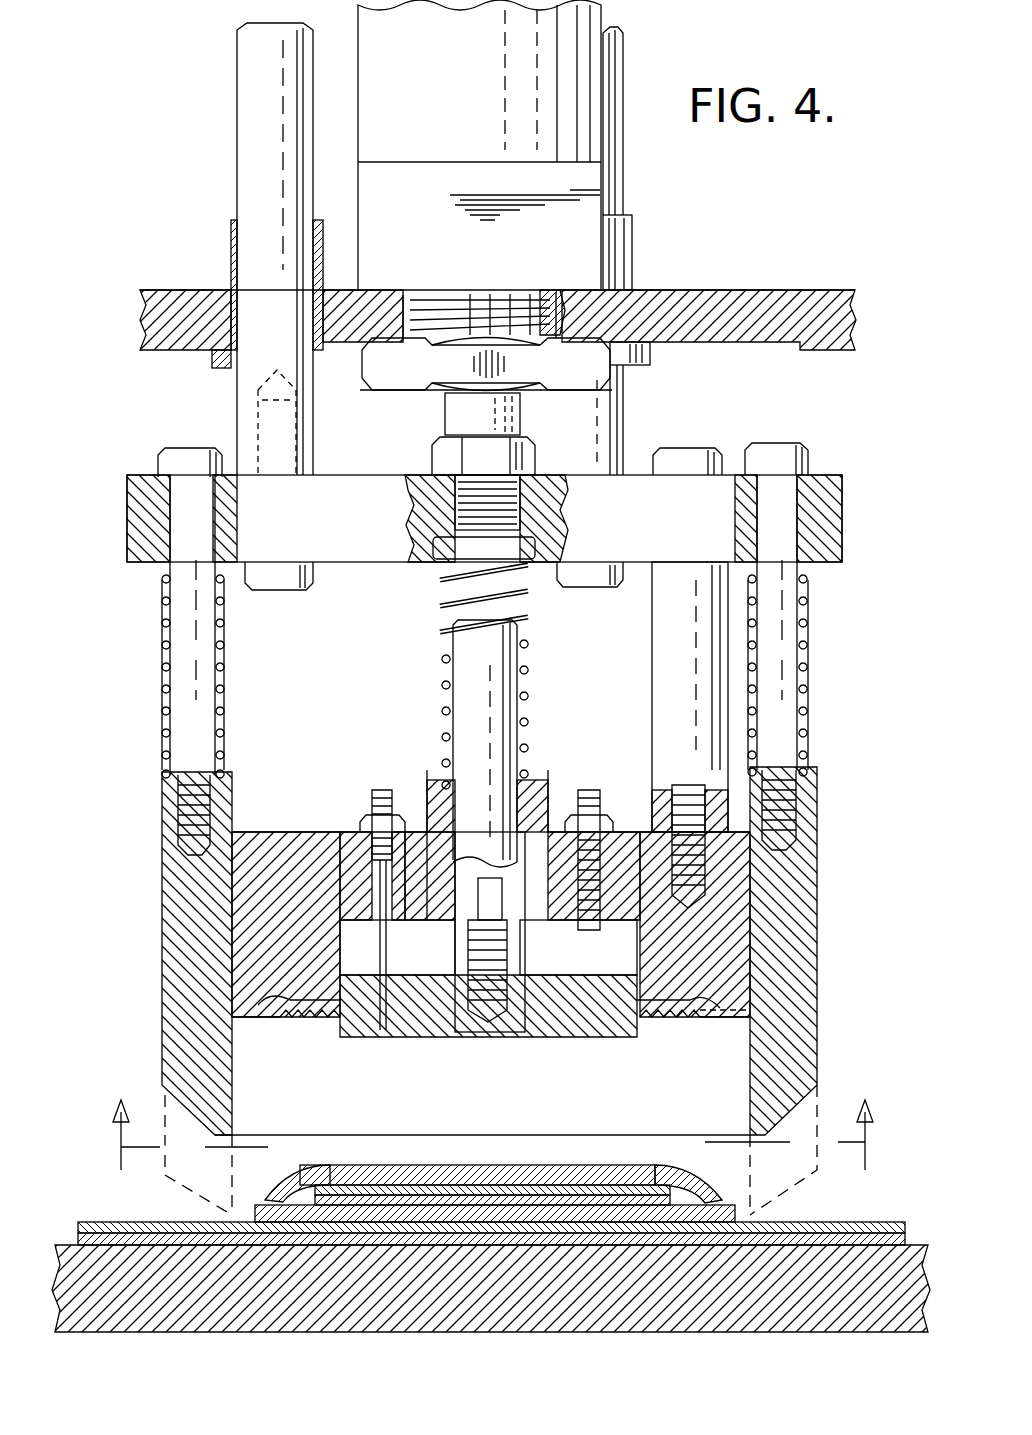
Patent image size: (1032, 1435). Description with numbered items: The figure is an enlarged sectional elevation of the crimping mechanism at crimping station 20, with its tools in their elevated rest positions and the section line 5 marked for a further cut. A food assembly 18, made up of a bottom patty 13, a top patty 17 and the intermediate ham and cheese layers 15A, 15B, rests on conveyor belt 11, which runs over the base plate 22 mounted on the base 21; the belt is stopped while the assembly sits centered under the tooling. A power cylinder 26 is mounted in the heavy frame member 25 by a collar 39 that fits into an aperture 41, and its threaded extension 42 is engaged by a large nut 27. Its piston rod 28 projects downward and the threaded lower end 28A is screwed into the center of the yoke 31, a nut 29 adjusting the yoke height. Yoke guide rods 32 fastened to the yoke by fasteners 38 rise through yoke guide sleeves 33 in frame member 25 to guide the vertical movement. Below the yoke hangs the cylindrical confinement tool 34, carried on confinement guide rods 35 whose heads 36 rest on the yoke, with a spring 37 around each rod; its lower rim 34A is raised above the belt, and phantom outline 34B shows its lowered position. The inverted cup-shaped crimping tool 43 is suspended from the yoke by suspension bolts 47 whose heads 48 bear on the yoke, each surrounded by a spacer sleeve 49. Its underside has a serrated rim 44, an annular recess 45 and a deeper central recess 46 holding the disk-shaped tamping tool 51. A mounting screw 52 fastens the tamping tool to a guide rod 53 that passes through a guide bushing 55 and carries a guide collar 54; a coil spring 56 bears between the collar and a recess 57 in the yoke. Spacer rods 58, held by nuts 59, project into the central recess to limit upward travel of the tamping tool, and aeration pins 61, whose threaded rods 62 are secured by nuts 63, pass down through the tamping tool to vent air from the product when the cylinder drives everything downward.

The conveyor belt 11 is at (170, 1233).
The bottom patty 13 is at (735, 1210).
The ham layer 15A is at (552, 1165).
The cheese layer 15B is at (618, 1165).
The top patty 17 is at (340, 1168).
The food assembly 18 is at (444, 1155).
The crimping station 20 is at (703, 246).
The base 21 is at (522, 1330).
The base plate 22 is at (78, 1236).
The frame member 25 is at (790, 295).
The power cylinder 26 is at (378, 72).
The nut 27 is at (592, 375).
The piston rod 28 is at (446, 412).
The lower end of piston rod 28A is at (550, 500).
The nut 29 is at (432, 455).
The yoke 31 is at (845, 505).
The yoke guide rod 32 is at (247, 160).
The yoke guide sleeve 33 is at (232, 252).
The confinement tool 34 is at (152, 944).
The lower rim of confinement tool 34A is at (758, 1138).
The phantom outline 34B is at (165, 1095).
The confinement guide rod 35 is at (172, 688).
The head 36 is at (168, 468).
The spring 37 is at (165, 735).
The fastener 38 is at (282, 582).
The collar 39 is at (510, 272).
The aperture 41 is at (555, 292).
The threaded extension 42 is at (440, 318).
The crimping tool 43 is at (270, 1020).
The serrated rim 44 is at (695, 1018).
The annular recess 45 is at (656, 1018).
The central recess 46 is at (578, 947).
The suspension bolt 47 is at (690, 790).
The head 48 is at (698, 450).
The spacer sleeve 49 is at (660, 656).
The tamping tool 51 is at (592, 1038).
The mounting screw 52 is at (486, 1030).
The guide rod 53 is at (470, 692).
The guide collar 54 is at (540, 782).
The guide bushing 55 is at (452, 928).
The coil spring 56 is at (442, 628).
The recess 57 is at (438, 560).
The spacer rod 58 is at (590, 790).
The nut 59 is at (600, 814).
The aeration pin 61 is at (368, 945).
The threaded rod 62 is at (384, 790).
The nut 63 is at (368, 818).
The section line 5- 5 is at (491, 1151).